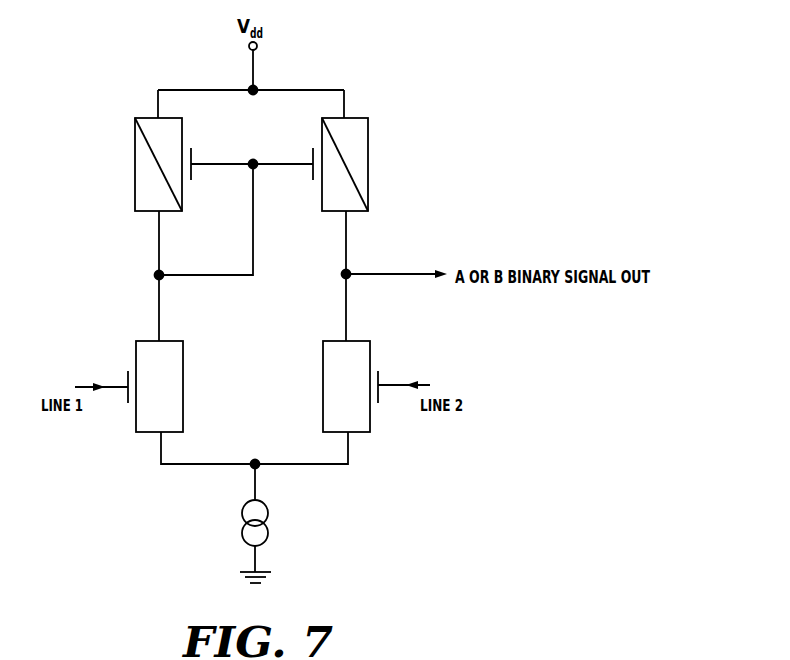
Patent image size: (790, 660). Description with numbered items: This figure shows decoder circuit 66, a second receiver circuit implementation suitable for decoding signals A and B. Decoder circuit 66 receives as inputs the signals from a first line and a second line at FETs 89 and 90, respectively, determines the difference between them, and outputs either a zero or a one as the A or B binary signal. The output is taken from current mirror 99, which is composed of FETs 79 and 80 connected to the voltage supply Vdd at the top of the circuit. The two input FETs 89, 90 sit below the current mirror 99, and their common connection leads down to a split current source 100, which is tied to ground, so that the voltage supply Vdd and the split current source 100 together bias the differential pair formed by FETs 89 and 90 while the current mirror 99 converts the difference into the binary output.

The decoder circuit 66 is at (98, 101).
The FET 79 is at (177, 192).
The FET 80 is at (360, 136).
The current mirror 99 is at (306, 130).
The FET 89 is at (177, 355).
The FET 90 is at (362, 355).
The split current source 100 is at (268, 520).